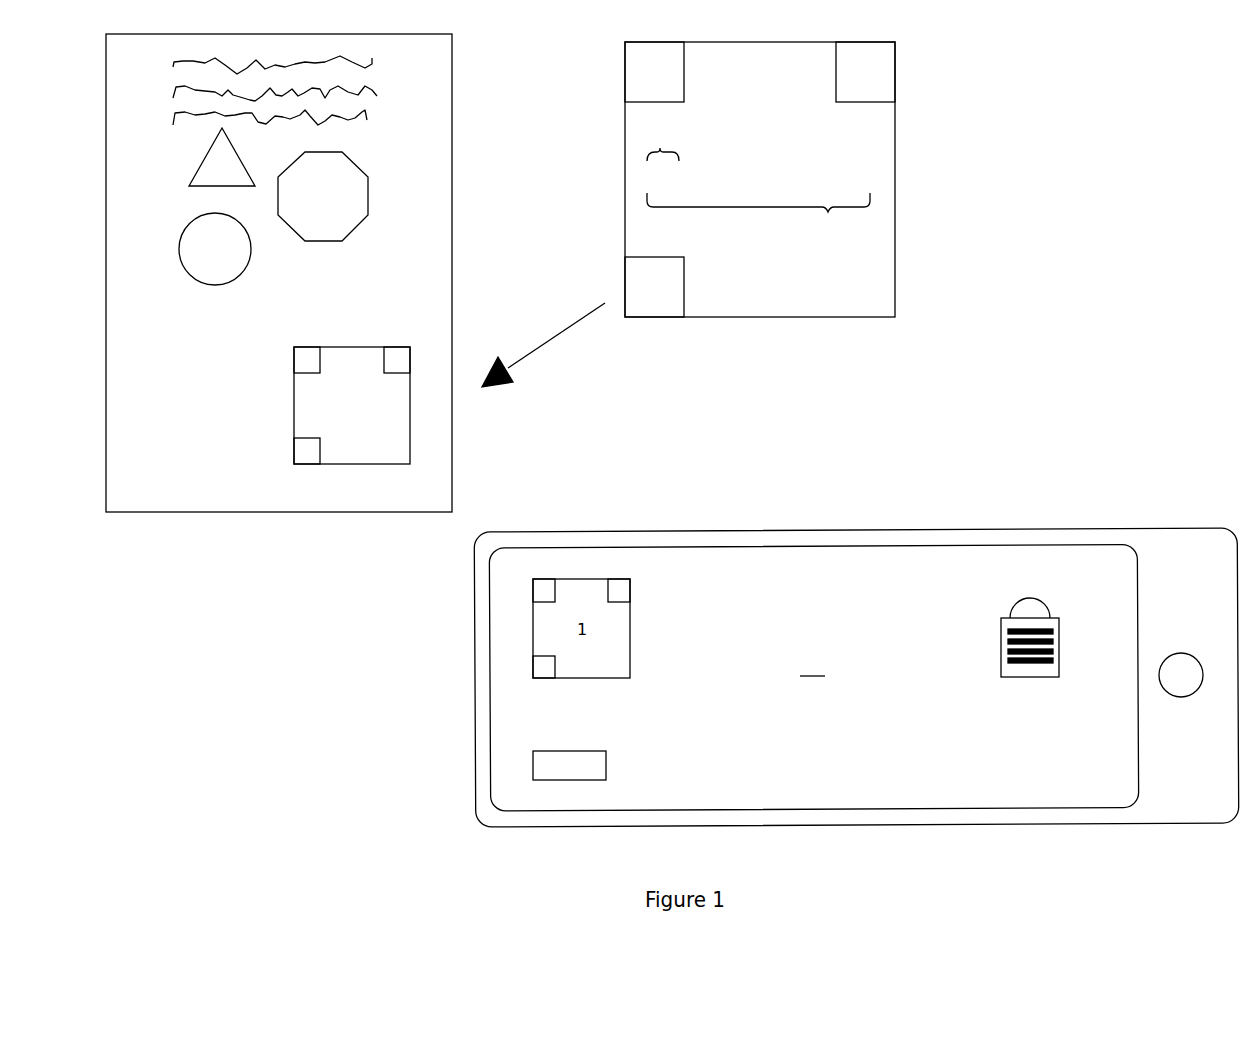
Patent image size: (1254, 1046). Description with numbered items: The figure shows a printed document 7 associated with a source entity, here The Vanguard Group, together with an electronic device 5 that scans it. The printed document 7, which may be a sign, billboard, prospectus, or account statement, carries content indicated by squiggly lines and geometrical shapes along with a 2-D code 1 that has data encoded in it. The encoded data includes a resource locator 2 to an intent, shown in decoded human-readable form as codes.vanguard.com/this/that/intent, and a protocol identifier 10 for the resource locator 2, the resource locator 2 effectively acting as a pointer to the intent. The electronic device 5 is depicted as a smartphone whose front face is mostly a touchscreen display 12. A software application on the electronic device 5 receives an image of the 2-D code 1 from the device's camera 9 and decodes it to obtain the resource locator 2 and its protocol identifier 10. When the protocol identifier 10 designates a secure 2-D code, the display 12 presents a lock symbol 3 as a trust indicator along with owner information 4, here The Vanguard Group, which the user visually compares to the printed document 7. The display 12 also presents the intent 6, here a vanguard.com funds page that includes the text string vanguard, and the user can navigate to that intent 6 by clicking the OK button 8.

The 2-D code 1 is at (620, 317).
The resource locator 2 is at (798, 224).
The lock symbol 3 is at (984, 561).
The owner information 4 is at (814, 530).
The electronic device 5 is at (856, 644).
The intent 6 is at (815, 711).
The printed document 7 is at (279, 361).
The OK button 8 is at (492, 752).
The camera 9 is at (1135, 563).
The protocol identifier 10 is at (712, 142).
The display 12 is at (812, 666).